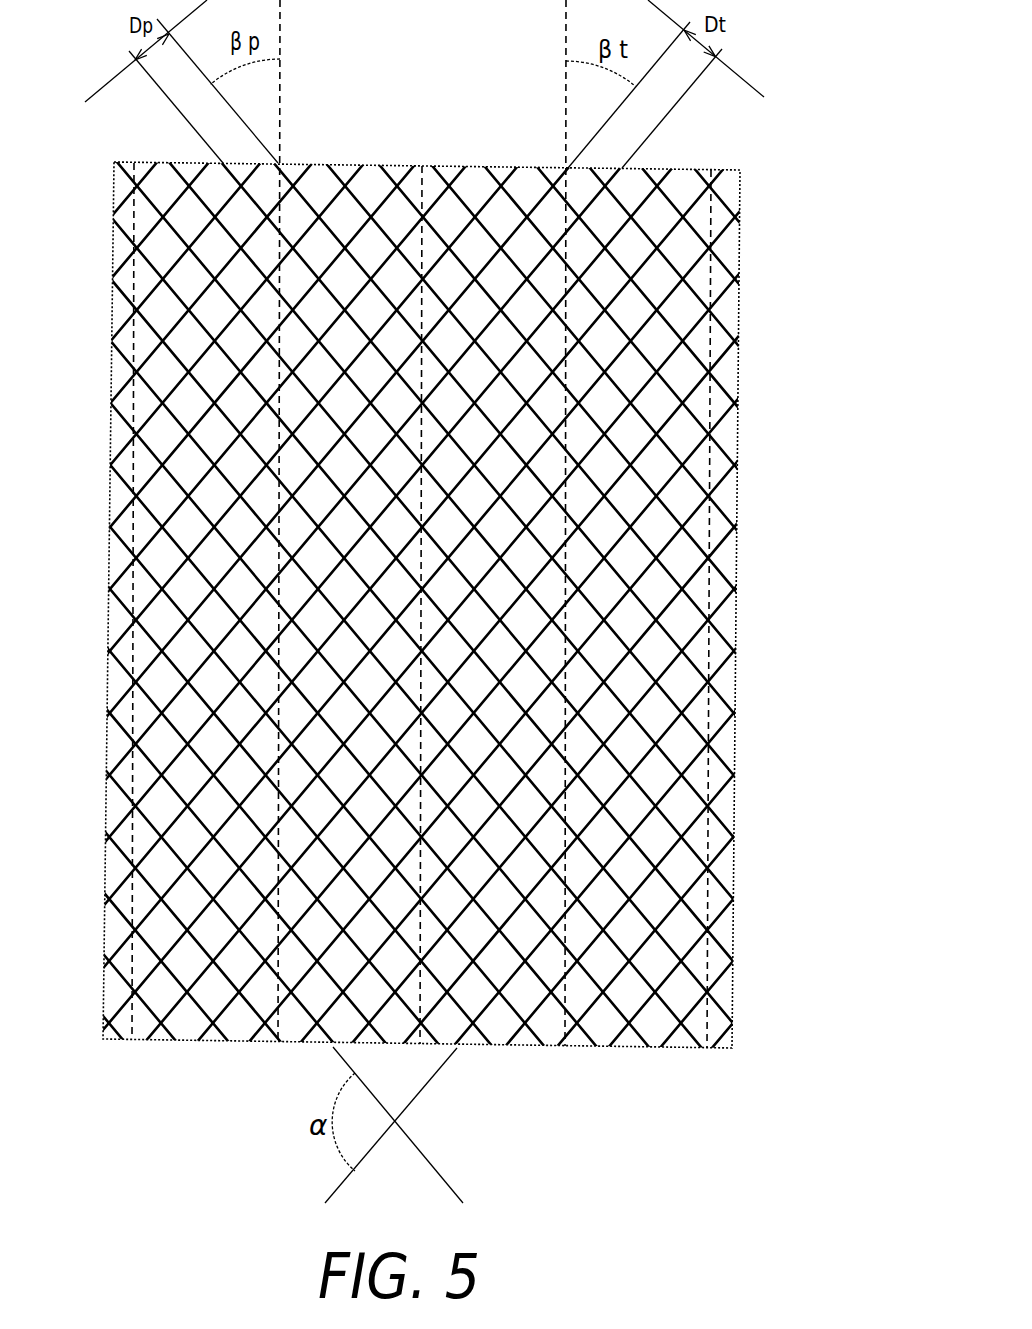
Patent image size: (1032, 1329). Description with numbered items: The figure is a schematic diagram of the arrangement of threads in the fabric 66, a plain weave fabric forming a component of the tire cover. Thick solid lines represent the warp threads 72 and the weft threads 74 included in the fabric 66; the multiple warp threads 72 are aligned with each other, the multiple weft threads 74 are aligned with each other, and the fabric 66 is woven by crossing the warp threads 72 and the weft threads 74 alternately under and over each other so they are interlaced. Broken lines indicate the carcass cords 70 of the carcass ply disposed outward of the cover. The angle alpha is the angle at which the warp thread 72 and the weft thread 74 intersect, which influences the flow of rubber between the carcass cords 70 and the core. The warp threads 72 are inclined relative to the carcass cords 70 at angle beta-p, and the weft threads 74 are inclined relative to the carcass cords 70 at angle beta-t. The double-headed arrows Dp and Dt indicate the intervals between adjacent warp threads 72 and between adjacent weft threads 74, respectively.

The fabric 66 is at (418, 162).
The carcass cords 70 is at (143, 1032).
The warp threads 72 is at (293, 165).
The weft threads 74 is at (552, 167).